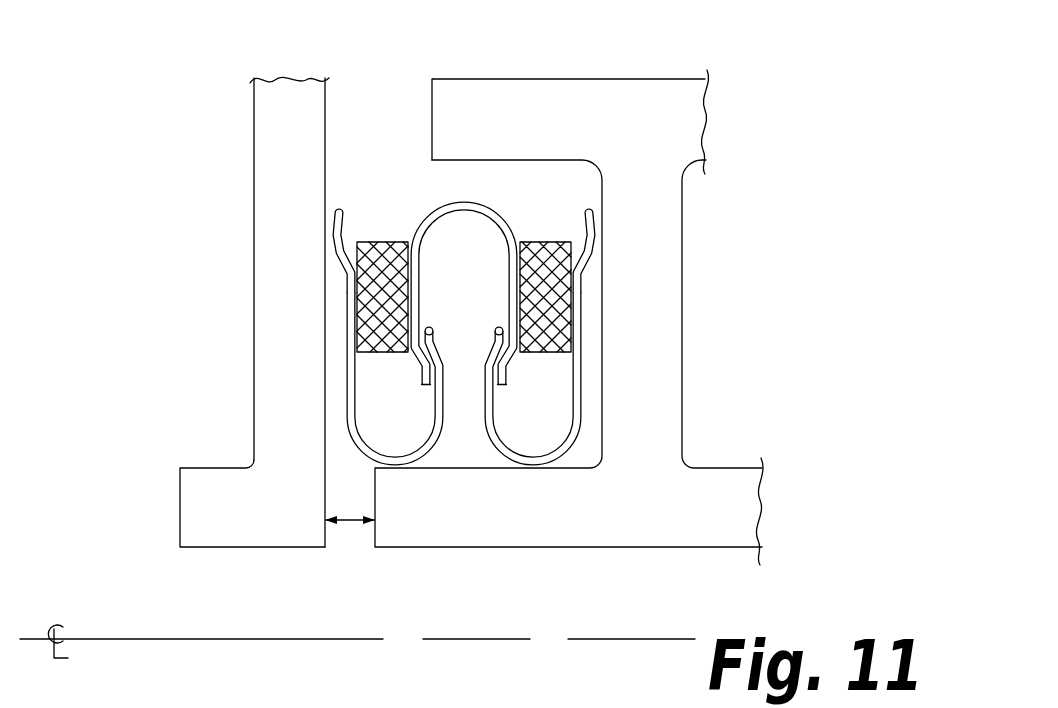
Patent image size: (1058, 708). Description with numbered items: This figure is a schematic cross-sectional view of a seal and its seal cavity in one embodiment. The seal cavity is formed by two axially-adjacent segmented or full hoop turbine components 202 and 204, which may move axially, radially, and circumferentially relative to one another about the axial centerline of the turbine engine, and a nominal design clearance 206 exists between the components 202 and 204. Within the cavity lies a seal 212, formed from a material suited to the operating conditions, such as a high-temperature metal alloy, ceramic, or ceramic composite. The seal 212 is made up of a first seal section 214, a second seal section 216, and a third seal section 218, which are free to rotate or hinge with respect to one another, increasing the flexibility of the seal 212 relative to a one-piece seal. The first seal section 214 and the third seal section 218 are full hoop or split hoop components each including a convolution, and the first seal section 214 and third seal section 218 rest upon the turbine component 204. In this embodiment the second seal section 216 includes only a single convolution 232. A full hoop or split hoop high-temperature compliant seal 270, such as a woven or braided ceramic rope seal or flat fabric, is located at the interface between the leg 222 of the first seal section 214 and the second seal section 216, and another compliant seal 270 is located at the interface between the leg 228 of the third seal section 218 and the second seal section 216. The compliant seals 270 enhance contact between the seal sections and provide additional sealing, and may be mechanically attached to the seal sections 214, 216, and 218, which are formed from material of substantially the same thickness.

The turbine component 202 is at (249, 548).
The turbine component 204 is at (656, 548).
The nominal design clearance 206 is at (352, 523).
The seal 212 is at (356, 89).
The first seal section 214 is at (343, 355).
The second seal section 216 is at (465, 241).
The third seal section 218 is at (590, 367).
The leg 222 is at (348, 393).
The leg 228 is at (580, 283).
The convolution 232 is at (426, 217).
The compliant seal 270 is at (383, 241).